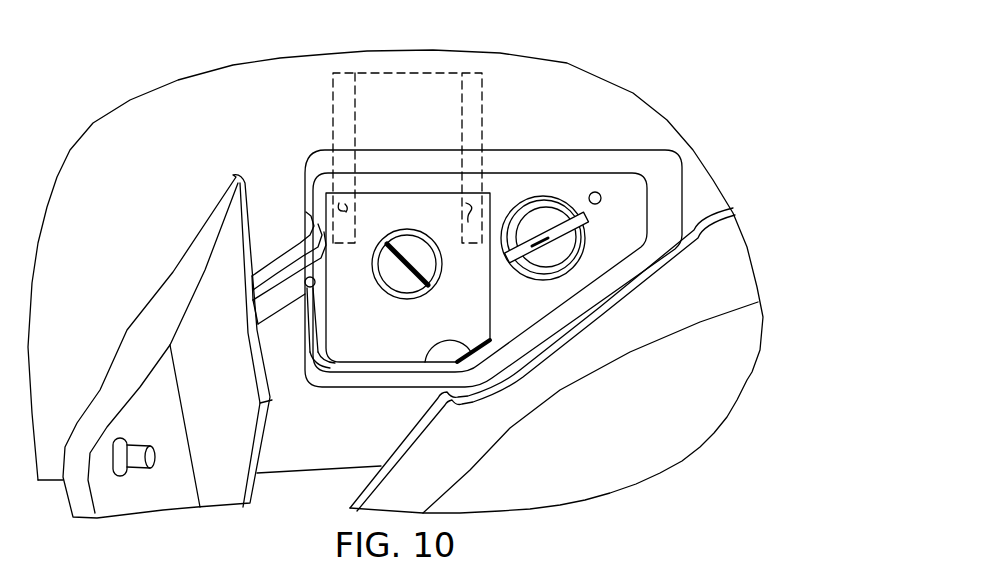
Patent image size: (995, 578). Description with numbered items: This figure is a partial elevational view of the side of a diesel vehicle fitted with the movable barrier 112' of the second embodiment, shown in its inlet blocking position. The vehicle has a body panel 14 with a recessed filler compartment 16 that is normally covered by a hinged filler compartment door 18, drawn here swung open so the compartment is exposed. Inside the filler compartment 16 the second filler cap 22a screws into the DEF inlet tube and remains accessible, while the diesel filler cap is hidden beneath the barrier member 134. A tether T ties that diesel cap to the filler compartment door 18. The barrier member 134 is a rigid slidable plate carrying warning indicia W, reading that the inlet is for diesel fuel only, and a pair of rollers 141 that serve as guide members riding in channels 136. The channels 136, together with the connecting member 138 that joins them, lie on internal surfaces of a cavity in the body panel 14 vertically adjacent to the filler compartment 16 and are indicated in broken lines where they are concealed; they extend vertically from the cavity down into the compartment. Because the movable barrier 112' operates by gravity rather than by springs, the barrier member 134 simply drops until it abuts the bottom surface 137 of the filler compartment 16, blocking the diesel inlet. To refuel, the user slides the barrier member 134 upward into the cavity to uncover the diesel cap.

The body panel 14 is at (180, 78).
The filler compartment 16 is at (577, 320).
The filler compartment door 18 is at (165, 272).
The second filler cap 22a is at (552, 223).
The movable barrier 112' is at (477, 224).
The barrier member 134 is at (488, 310).
The channels 136 is at (462, 107).
The bottom surface 137 is at (425, 365).
The connecting member 138 is at (446, 72).
The rollers 141 is at (337, 210).
The tether T is at (330, 378).
The warning indicia W is at (389, 350).